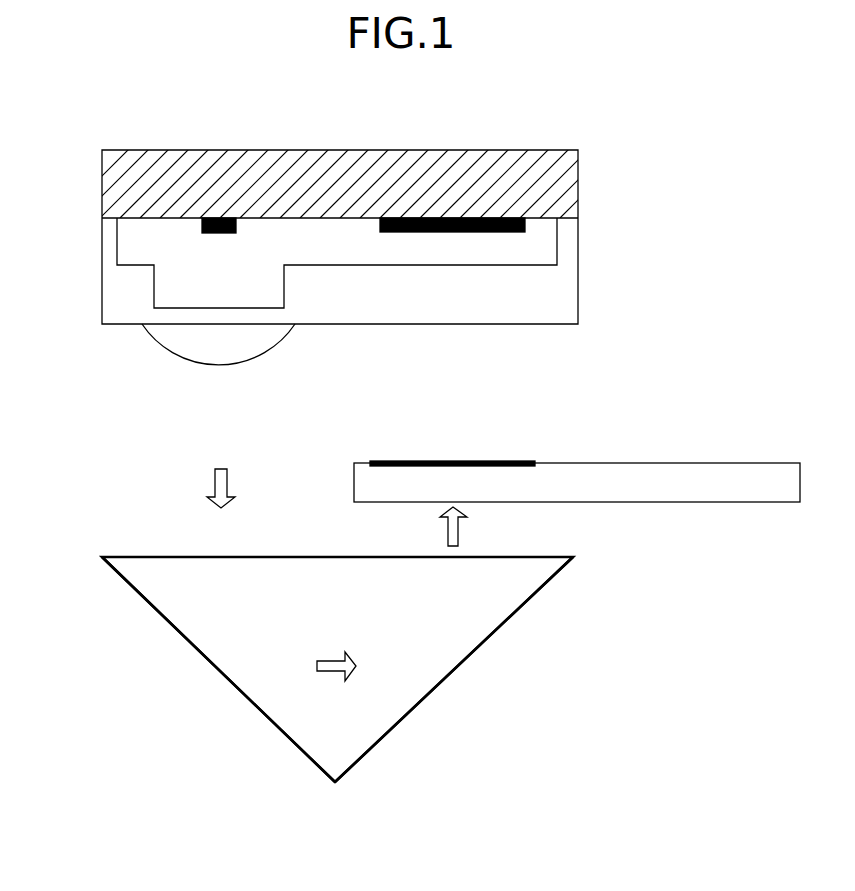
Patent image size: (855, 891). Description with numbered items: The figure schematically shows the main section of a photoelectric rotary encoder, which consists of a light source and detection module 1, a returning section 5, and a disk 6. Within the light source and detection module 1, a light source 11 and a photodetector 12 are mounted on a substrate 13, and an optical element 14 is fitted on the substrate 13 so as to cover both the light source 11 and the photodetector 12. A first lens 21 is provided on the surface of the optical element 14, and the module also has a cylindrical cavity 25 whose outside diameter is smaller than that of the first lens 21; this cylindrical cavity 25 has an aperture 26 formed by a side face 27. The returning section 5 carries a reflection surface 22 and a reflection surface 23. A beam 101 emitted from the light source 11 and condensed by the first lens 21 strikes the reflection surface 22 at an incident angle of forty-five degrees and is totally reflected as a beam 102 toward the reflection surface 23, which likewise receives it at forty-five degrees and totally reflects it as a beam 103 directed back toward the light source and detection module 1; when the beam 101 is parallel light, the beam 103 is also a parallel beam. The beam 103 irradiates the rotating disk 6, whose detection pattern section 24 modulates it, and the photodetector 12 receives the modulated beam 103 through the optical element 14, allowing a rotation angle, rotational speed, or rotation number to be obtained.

The light source and detection module 1 is at (102, 183).
The light source 11 is at (214, 218).
The photodetector 12 is at (495, 233).
The substrate 13 is at (386, 185).
The optical element 14 is at (112, 285).
The first lens 21 is at (210, 360).
The reflection surface 22 is at (218, 672).
The reflection surface 23 is at (487, 639).
The detection pattern section 24 is at (442, 460).
The cylindrical cavity 25 is at (247, 275).
The aperture 26 is at (248, 308).
The side face 27 is at (284, 293).
The returning section 5 is at (172, 607).
The disk 6 is at (637, 470).
The beam 101 is at (215, 478).
The beam 102 is at (327, 673).
The beam 103 is at (462, 532).